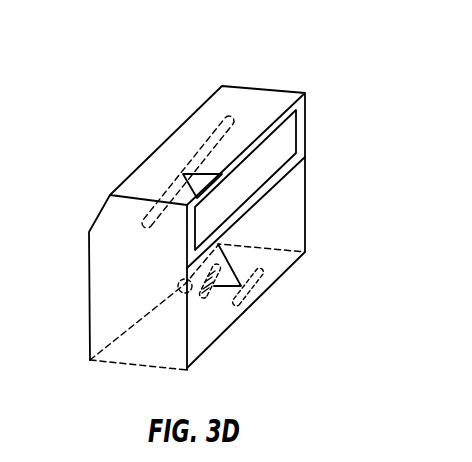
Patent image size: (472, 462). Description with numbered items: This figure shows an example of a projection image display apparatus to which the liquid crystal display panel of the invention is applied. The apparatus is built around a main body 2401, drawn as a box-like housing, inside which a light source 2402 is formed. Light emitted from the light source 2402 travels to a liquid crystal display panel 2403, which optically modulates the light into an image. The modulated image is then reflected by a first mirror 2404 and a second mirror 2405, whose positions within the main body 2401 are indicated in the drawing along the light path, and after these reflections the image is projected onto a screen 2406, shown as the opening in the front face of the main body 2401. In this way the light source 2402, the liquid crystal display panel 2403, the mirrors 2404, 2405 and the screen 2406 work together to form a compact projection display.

The main body 2401 is at (243, 92).
The light source 2402 is at (181, 279).
The liquid crystal display panel 2403 is at (204, 306).
The mirror 2404 is at (252, 285).
The mirror 2405 is at (173, 168).
The screen 2406 is at (289, 144).